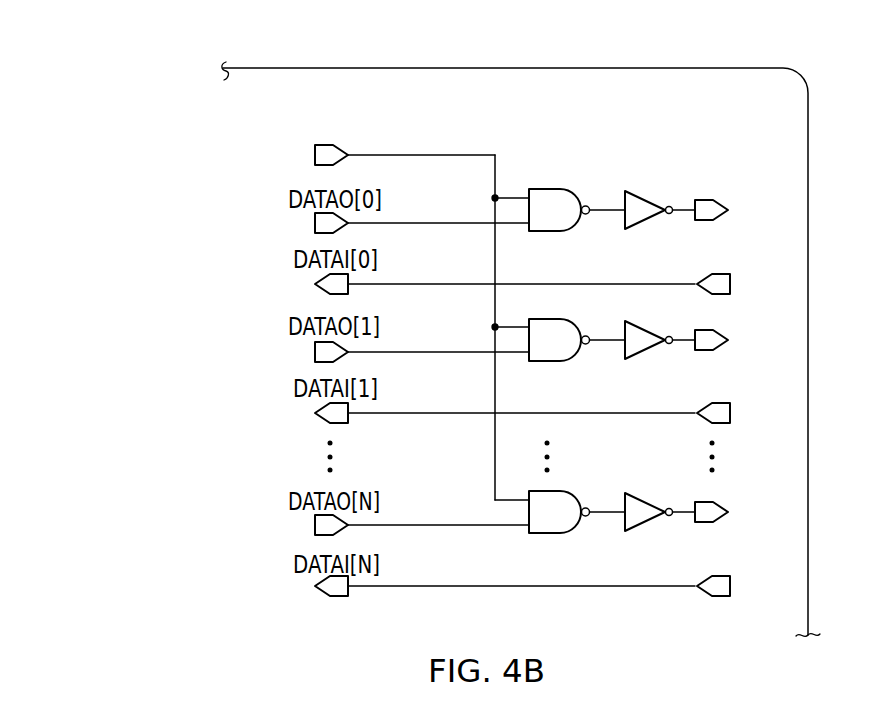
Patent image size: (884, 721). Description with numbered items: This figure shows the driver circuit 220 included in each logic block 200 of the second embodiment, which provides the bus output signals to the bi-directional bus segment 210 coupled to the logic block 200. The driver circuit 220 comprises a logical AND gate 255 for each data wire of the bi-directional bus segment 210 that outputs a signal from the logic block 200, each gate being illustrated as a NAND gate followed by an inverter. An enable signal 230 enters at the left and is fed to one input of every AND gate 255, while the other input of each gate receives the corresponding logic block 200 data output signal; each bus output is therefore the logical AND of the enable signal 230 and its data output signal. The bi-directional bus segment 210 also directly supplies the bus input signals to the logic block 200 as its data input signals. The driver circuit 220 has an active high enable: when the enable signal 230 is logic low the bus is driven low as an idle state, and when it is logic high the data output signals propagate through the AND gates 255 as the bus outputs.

The logic block 200 is at (720, 68).
The bi-directional bus segment 210 is at (753, 288).
The driver circuit 220 is at (546, 119).
The enable signal 230 is at (315, 153).
The logical AND gate 255 is at (521, 339).